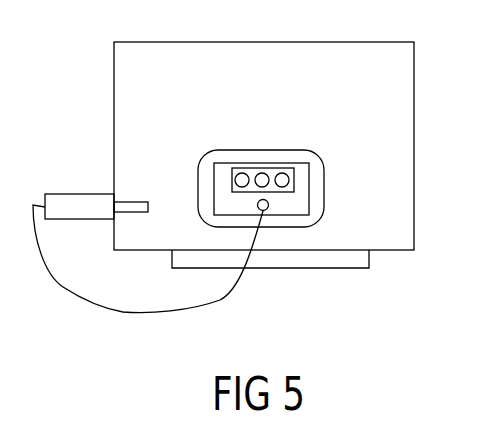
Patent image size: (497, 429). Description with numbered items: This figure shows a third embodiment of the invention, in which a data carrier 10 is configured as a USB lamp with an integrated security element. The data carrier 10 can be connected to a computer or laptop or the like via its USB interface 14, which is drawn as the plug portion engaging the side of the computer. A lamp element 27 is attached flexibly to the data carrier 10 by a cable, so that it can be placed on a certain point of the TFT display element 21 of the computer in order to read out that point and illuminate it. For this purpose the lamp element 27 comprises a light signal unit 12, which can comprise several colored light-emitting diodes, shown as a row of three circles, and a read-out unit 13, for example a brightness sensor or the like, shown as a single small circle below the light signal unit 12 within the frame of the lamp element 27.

The data carrier 10 is at (72, 193).
The light signal unit 12 is at (252, 170).
The read-out unit 13 is at (268, 208).
The USB interface 14 is at (142, 200).
The TFT display element 21 is at (264, 155).
The lamp element 27 is at (316, 153).